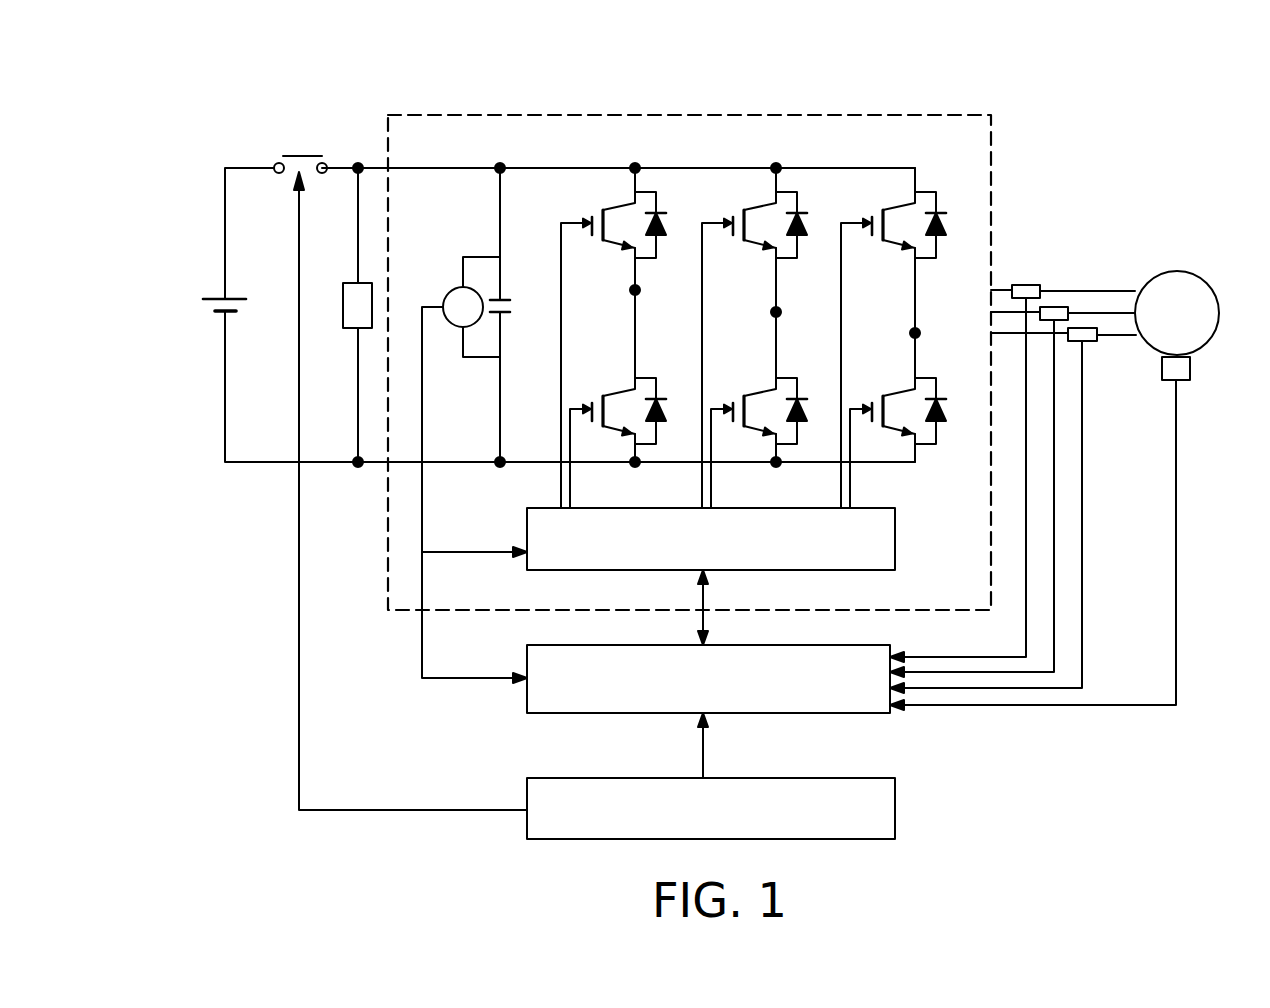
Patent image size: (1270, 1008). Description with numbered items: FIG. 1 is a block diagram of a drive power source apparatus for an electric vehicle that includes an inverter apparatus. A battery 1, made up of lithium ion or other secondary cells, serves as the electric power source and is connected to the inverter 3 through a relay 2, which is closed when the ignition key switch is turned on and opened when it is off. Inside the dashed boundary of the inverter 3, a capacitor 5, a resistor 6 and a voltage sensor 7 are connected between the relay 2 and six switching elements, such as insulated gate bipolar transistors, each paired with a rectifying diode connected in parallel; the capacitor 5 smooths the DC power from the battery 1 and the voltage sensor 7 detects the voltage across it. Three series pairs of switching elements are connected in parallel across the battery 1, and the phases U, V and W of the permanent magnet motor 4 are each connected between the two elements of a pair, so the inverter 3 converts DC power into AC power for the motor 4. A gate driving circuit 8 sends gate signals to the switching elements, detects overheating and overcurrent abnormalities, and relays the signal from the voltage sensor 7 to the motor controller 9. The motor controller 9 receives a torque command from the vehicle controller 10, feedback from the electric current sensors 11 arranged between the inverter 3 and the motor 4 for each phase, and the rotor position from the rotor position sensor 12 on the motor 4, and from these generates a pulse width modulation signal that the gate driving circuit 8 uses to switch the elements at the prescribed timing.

The battery 1 is at (198, 285).
The relay 2 is at (273, 150).
The inverter 3 is at (993, 118).
The permanent magnet motor 4 is at (1205, 283).
The capacitor 5 is at (512, 292).
The resistor 6 is at (368, 283).
The voltage sensor 7 is at (472, 288).
The gate driving circuit 8 is at (895, 516).
The motor controller 9 is at (535, 645).
The vehicle controller 10 is at (535, 778).
The electric current sensors 11 is at (1068, 272).
The rotor position sensor 12 is at (1190, 370).